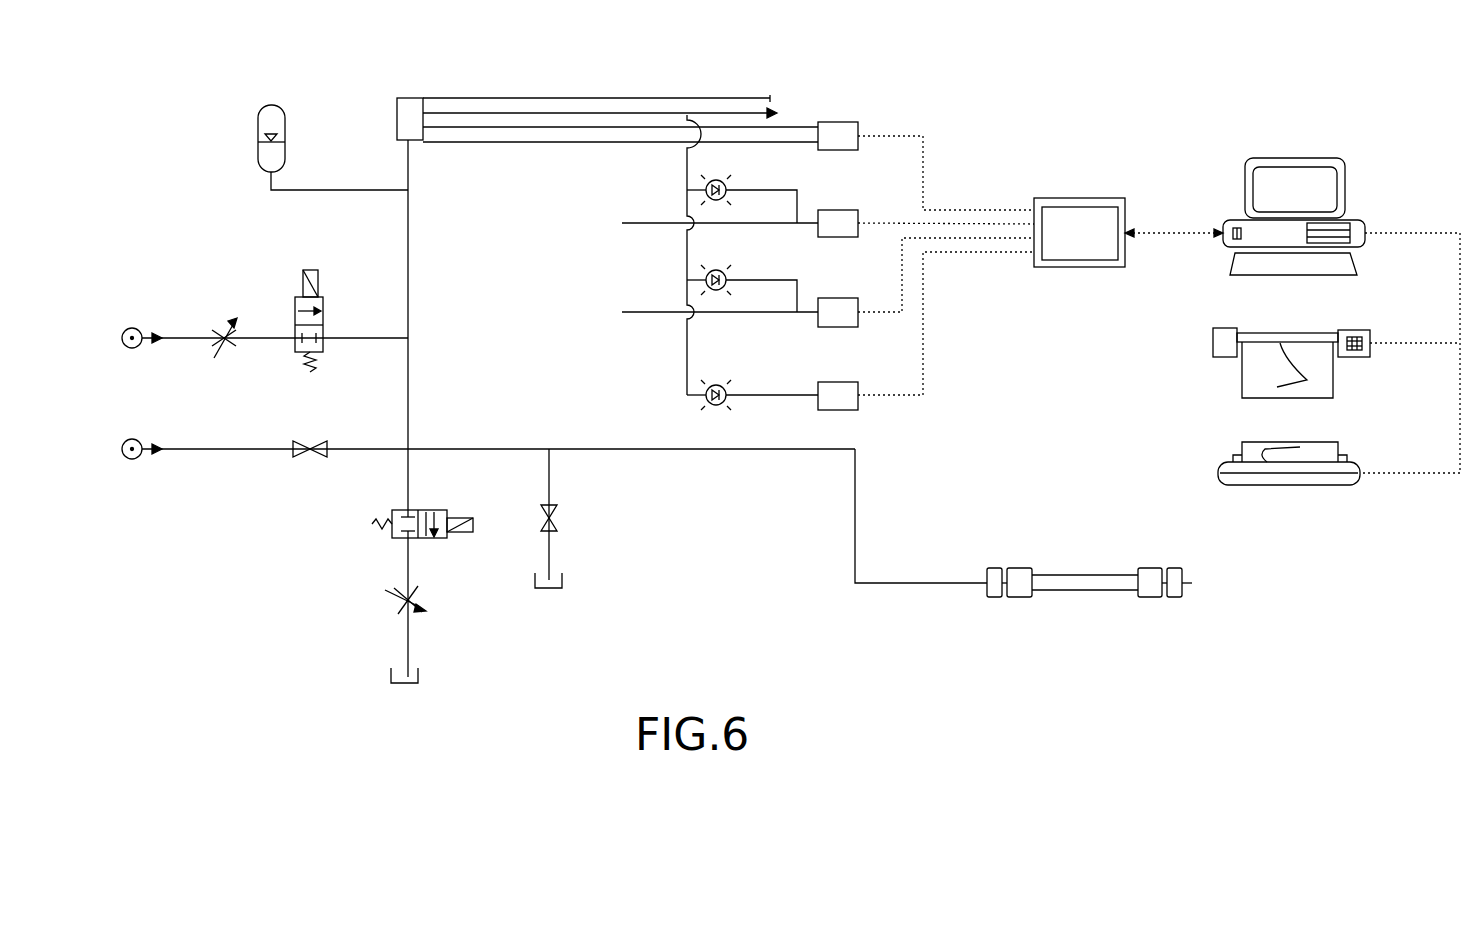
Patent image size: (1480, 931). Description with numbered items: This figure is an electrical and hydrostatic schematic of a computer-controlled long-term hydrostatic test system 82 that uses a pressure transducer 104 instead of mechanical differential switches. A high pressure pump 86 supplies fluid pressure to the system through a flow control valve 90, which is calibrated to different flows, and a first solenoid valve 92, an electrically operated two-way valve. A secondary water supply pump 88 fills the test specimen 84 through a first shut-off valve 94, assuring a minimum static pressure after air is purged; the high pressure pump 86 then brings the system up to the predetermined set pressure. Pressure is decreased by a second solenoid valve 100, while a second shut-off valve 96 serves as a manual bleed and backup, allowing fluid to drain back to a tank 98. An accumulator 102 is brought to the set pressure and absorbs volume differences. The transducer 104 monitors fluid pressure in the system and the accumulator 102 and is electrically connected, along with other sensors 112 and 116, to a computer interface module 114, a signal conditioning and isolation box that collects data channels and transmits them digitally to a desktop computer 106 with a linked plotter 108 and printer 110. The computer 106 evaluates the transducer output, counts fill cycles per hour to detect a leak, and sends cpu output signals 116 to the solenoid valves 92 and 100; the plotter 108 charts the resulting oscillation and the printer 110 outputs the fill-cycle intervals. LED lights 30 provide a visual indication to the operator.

The DC LED lights 30 is at (727, 184).
The computer-controlled long-term hydrostatic test system 82 is at (967, 178).
The test specimen 84 is at (1093, 575).
The high pressure pump 86 is at (125, 328).
The water supply pump 88 is at (125, 439).
The flow control valve 90 is at (222, 336).
The first solenoid valve 92 is at (327, 320).
The first shut-off valve 94 is at (307, 453).
The second shut-off valve 96 is at (553, 521).
The tank 98 is at (563, 577).
The second solenoid valve 100 is at (440, 510).
The accumulator 102 is at (267, 105).
The pressure transducer 104 is at (403, 97).
The desktop computer 106 is at (1305, 158).
The plotter 108 is at (1302, 333).
The printer 110 is at (1305, 486).
The pressure transducer 112 is at (838, 122).
The computer interface module 114 is at (1075, 268).
The signals 116 is at (835, 210).